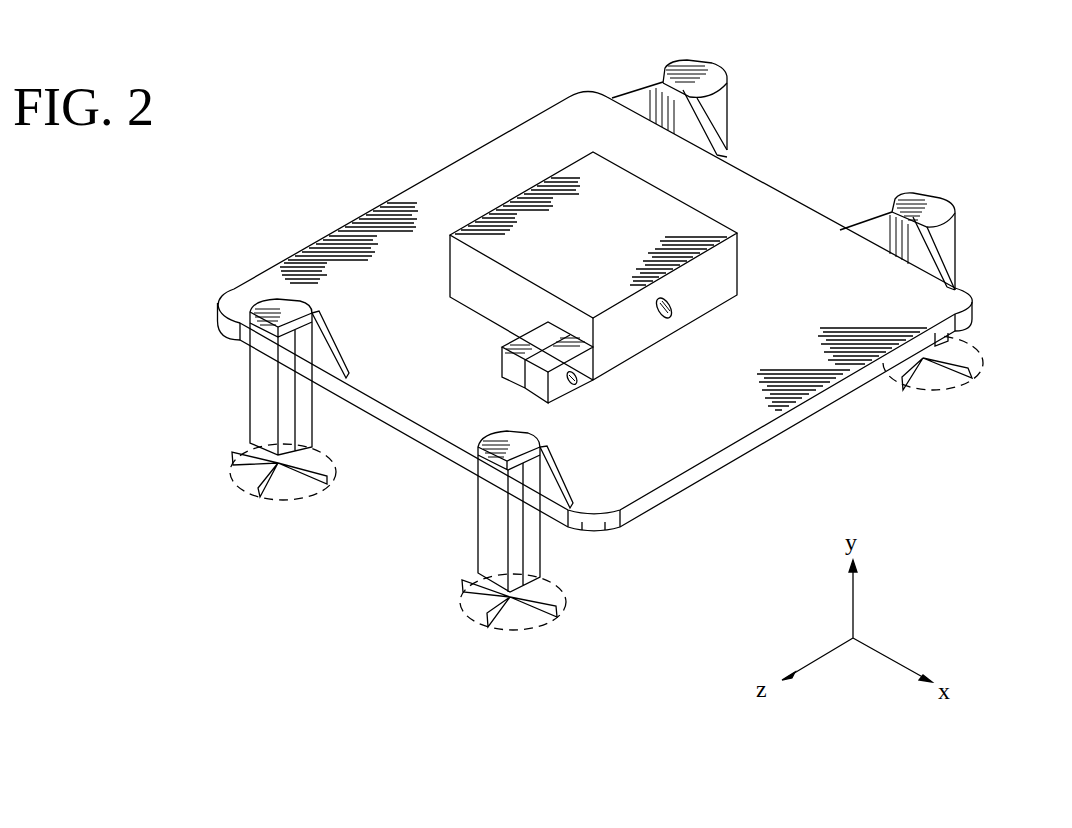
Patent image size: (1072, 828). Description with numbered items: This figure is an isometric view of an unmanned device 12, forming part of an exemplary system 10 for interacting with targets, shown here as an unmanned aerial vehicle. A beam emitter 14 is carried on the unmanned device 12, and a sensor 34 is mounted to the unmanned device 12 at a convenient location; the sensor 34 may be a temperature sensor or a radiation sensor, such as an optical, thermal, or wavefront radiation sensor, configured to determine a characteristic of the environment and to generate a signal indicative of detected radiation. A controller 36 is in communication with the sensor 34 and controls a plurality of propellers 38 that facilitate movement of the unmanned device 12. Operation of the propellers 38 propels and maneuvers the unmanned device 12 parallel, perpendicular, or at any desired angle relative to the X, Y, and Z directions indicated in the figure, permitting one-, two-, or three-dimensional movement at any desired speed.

The system 10 is at (920, 122).
The unmanned device 12 is at (419, 178).
The beam emitter 14 is at (717, 209).
The sensor 34 is at (537, 385).
The controller 36 is at (512, 362).
The propellers 38 is at (268, 492).